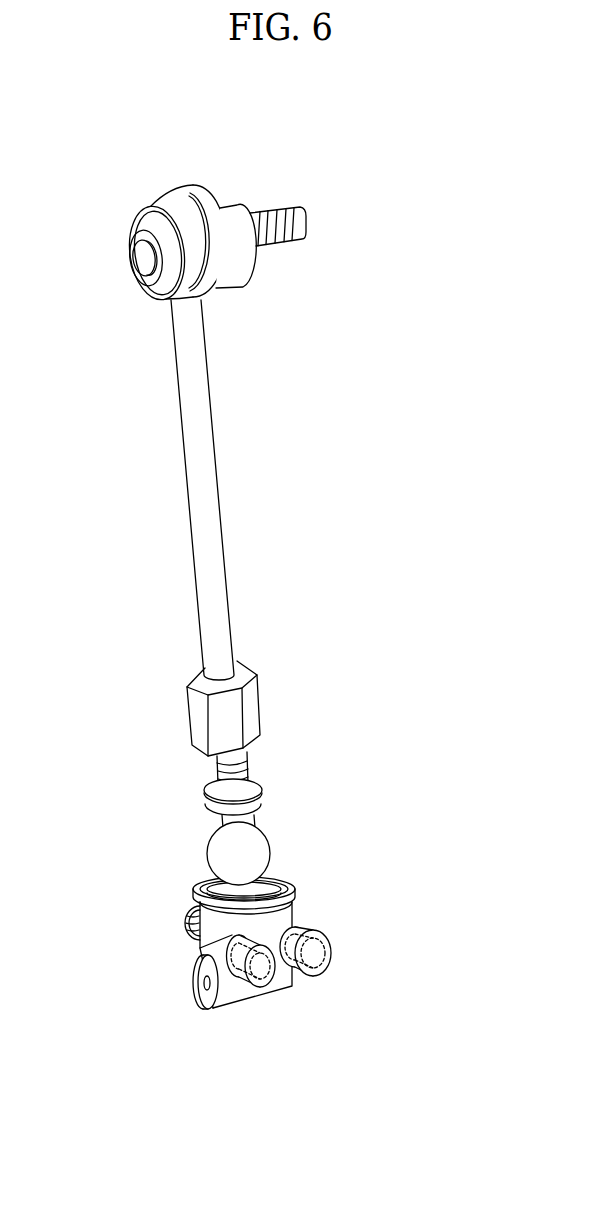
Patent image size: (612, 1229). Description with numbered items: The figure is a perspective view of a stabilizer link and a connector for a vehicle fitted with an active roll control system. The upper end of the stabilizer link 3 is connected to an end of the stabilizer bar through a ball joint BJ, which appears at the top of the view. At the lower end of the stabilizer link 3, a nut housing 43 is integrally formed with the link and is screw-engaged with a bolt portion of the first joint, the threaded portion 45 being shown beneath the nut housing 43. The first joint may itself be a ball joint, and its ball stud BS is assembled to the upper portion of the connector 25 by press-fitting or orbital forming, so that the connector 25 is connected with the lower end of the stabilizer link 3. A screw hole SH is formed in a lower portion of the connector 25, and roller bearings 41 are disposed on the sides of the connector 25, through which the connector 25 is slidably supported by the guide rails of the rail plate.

The ball joint BJ is at (193, 257).
The stabilizer link 3 is at (207, 464).
The nut housing 43 is at (252, 707).
The threaded stud 45 is at (238, 768).
The ball stud BS is at (263, 842).
The connector 25 is at (237, 993).
The roller bearings 41 is at (185, 923).
The screw hole SH is at (190, 989).